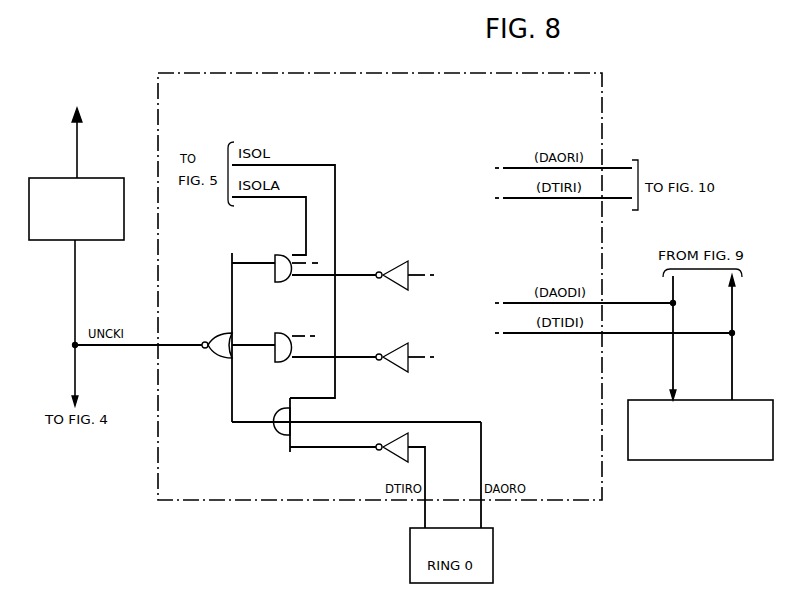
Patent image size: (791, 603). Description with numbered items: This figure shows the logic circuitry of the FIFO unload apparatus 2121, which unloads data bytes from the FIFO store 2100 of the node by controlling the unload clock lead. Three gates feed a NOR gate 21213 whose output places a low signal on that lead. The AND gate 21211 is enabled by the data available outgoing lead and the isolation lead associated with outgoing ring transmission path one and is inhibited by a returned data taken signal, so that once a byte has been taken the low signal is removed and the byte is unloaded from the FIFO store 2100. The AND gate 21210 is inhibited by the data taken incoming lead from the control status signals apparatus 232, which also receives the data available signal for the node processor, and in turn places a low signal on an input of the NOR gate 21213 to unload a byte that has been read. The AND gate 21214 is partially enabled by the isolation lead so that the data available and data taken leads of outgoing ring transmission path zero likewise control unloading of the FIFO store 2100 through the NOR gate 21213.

The FIFO unload apparatus 2121 is at (228, 87).
The FIFO store 2100 is at (104, 240).
The AND gate 21211 is at (304, 259).
The AND gate 21210 is at (304, 339).
The NOR gate 21213 is at (204, 337).
The AND gate 21214 is at (356, 426).
The control status signals apparatus 232 is at (704, 460).